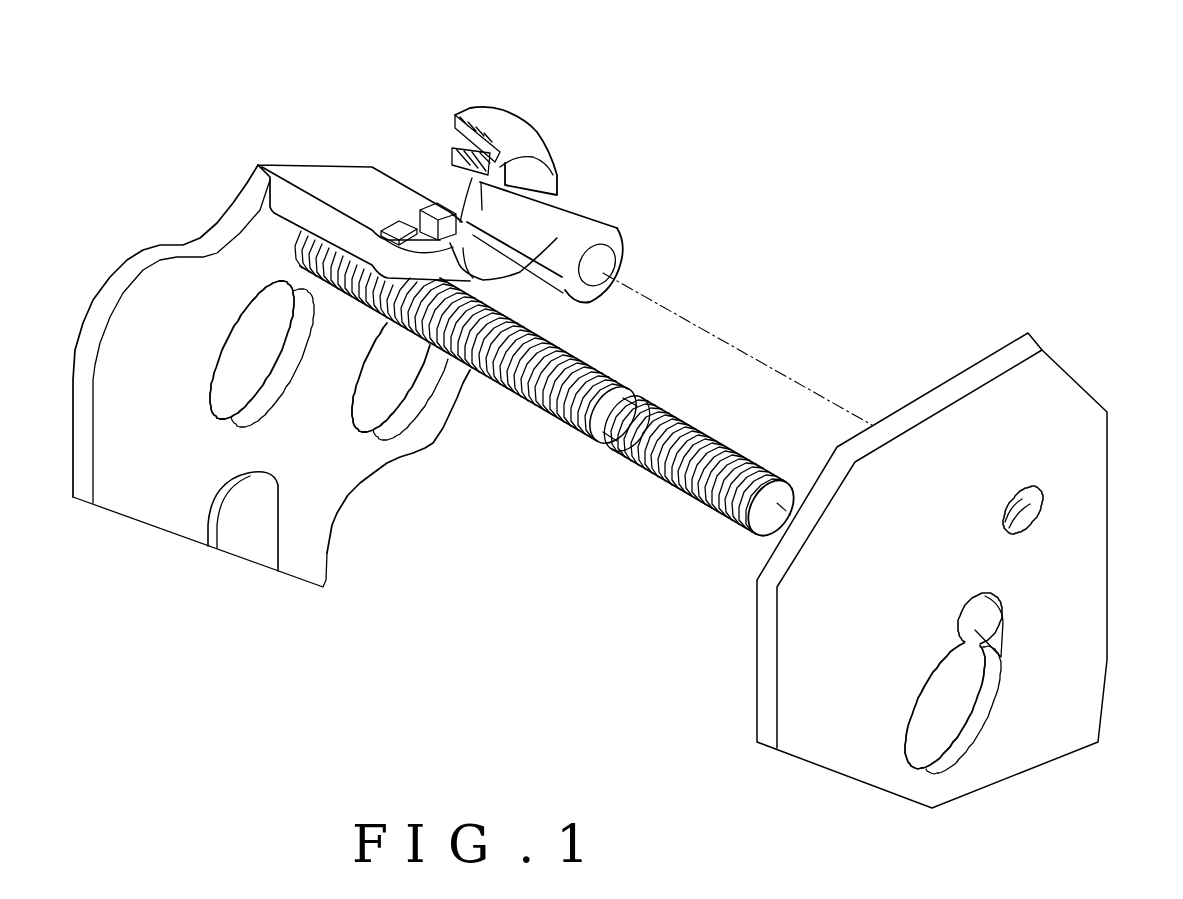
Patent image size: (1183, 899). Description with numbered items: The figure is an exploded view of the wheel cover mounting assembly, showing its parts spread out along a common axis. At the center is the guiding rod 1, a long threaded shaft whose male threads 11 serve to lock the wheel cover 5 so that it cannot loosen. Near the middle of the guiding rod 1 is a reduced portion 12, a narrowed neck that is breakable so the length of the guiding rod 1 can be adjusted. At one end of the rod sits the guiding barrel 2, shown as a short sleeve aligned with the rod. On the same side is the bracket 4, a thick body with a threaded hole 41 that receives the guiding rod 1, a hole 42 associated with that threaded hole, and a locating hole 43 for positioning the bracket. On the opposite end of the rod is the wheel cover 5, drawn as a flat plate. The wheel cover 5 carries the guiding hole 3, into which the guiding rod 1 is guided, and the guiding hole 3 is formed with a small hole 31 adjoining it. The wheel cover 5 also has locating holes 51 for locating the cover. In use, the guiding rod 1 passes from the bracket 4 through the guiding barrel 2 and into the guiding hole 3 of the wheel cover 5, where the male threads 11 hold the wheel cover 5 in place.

The guiding rod 1 is at (772, 520).
The male threads 11 is at (633, 460).
The reduced portion 12 is at (602, 433).
The guiding barrel 2 is at (593, 265).
The guiding hole 3 is at (948, 710).
The small hole 31 is at (998, 653).
The bracket 4 is at (157, 273).
The threaded hole 41 is at (470, 178).
The hole 42 is at (500, 167).
The locating hole 43 is at (253, 380).
The wheel cover 5 is at (1063, 403).
The locating holes 51 is at (1023, 512).